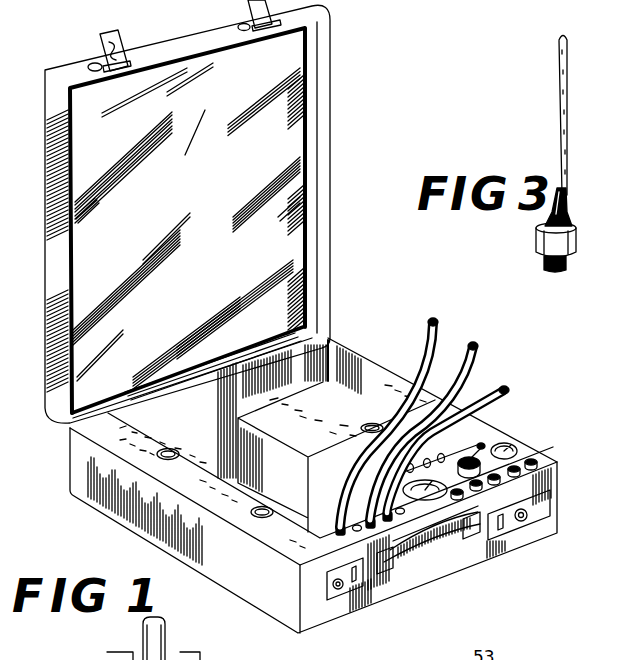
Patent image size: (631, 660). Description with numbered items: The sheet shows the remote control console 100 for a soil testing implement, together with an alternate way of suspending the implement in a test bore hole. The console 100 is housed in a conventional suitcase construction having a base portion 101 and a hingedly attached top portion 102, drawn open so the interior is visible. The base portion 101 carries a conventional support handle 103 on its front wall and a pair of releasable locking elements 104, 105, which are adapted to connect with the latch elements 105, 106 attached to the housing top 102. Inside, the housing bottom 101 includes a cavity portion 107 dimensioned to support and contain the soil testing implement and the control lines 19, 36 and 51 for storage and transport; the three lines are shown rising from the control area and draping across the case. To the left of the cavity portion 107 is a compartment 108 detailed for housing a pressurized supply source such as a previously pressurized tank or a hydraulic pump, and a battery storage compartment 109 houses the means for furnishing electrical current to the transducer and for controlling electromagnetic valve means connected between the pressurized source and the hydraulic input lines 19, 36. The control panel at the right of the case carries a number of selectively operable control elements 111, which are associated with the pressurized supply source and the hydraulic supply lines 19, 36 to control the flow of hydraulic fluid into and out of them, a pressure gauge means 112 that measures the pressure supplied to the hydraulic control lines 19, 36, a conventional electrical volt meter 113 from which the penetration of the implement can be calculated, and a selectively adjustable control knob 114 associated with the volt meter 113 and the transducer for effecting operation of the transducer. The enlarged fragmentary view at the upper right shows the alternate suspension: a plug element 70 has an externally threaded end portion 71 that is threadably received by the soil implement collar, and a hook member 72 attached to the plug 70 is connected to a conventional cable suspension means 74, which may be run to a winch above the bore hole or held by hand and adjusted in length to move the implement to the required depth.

In FIG. 1, the remote control console 100 is at (380, 360).
In FIG. 1, the base portion 101 is at (343, 350).
In FIG. 1, the top portion 102 is at (318, 160).
In FIG. 1, the support handle 103 is at (447, 554).
In FIG. 1, the releasable locking element 104 is at (355, 584).
In FIG. 1, the releasable locking element 105 is at (512, 528).
In FIG. 1, the latch element 106 is at (116, 31).
In FIG. 1, the cavity portion 107 is at (188, 428).
In FIG. 1, the compartment 108 is at (240, 511).
In FIG. 1, the battery storage compartment 109 is at (348, 421).
In FIG. 1, the control elements 111 is at (553, 460).
In FIG. 1, the pressure gauge means 112 is at (417, 468).
In FIG. 1, the volt meter 113 is at (518, 450).
In FIG. 1, the control knob 114 is at (484, 446).
In FIG. 1, the hydraulic input line 19 is at (442, 336).
In FIG. 1, the hydraulic input line 36 is at (479, 363).
In FIG. 1, the control line 51 is at (506, 395).
In FIG. 3, the cable suspension means 74 is at (562, 153).
In FIG. 3, the hook member 72 is at (569, 214).
In FIG. 3, the plug element 70 is at (578, 240).
In FIG. 3, the externally threaded end portion 71 is at (553, 270).